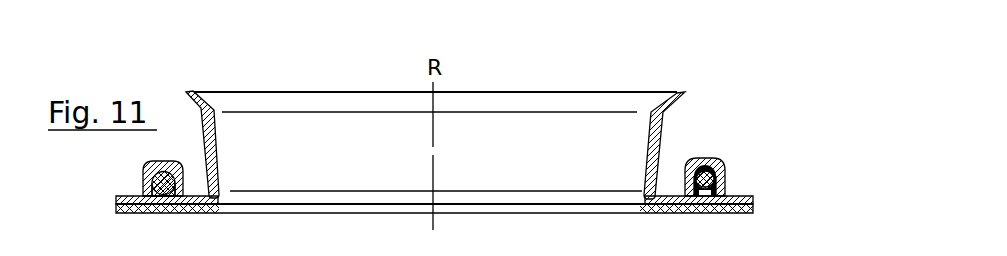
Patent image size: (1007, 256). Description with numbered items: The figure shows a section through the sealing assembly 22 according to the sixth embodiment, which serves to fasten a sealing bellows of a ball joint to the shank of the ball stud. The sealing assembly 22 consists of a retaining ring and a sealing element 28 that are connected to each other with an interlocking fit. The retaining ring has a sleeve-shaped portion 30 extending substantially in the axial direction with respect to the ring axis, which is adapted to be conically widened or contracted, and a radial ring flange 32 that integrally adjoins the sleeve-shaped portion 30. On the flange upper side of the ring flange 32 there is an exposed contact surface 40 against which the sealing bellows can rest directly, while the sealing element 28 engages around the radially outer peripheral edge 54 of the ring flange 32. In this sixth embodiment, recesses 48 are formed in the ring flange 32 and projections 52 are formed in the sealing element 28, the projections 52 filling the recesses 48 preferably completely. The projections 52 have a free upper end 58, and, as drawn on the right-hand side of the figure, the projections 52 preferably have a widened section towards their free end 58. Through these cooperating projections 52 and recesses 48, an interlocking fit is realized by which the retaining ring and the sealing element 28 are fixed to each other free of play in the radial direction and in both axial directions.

The sealing assembly 22 is at (483, 131).
The sleeve-shaped portion 30 is at (650, 140).
The exposed contact surface 40 is at (668, 195).
The sealing element 28 is at (151, 213).
The radial ring flange 32 is at (145, 165).
The projections 52 is at (143, 182).
The radially outer peripheral edge 54 is at (116, 199).
The free upper end 58 is at (708, 160).
The recesses 48 is at (723, 177).